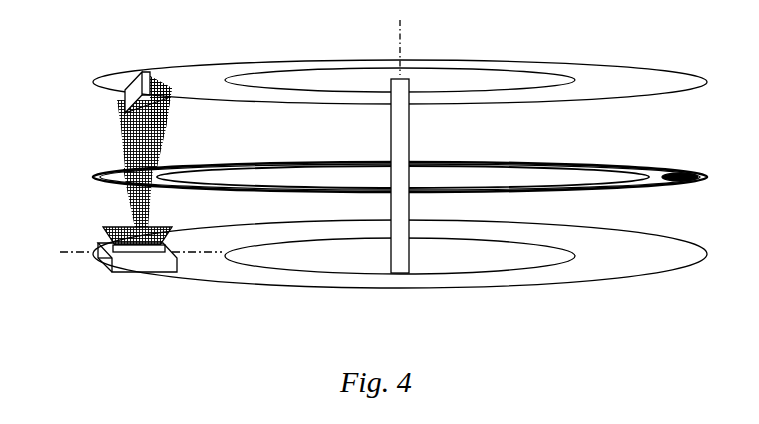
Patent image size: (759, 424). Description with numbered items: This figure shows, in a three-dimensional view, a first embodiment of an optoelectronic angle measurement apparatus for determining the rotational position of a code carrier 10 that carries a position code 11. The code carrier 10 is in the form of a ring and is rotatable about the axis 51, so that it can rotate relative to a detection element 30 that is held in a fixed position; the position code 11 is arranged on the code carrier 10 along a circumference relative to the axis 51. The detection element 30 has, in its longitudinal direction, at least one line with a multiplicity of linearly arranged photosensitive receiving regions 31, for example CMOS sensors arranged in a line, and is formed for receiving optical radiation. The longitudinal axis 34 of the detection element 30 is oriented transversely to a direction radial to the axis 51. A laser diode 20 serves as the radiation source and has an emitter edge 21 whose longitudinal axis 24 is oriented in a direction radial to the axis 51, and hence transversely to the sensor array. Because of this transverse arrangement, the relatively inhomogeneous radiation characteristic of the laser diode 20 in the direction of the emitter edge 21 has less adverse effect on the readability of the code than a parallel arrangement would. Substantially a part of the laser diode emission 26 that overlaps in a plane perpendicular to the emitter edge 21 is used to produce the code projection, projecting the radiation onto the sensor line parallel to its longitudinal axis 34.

The code carrier 10 is at (400, 147).
The position code 11 is at (650, 158).
The laser diode 20 is at (122, 289).
The emitter edge 21 is at (153, 290).
The longitudinal axis of the emitter edge 24 is at (130, 239).
The laser diode emission 26 is at (108, 217).
The detection element 30 is at (124, 66).
The photosensitive receiving regions 31 is at (182, 107).
The longitudinal axis of the detection element 34 is at (104, 152).
The axis 51 is at (369, 146).